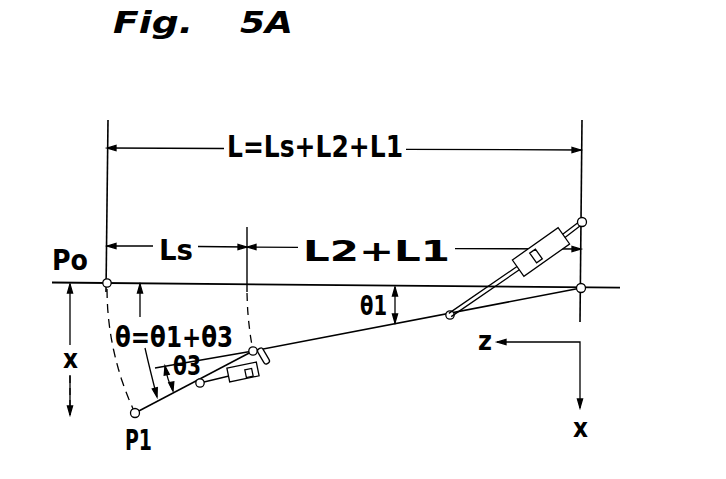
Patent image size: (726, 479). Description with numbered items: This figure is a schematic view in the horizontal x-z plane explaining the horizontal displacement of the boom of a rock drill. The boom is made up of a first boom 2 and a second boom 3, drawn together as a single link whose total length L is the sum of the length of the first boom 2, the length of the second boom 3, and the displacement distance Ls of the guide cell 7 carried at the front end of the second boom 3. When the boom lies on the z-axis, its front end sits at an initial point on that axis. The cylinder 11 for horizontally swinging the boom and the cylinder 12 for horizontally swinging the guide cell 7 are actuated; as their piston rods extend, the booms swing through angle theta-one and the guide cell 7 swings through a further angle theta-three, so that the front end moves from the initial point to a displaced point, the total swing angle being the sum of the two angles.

The first boom 2 is at (370, 354).
The second boom 3 is at (355, 333).
The guide cell 7 is at (201, 387).
The cylinder 11 is at (547, 238).
The cylinder 12 is at (250, 381).